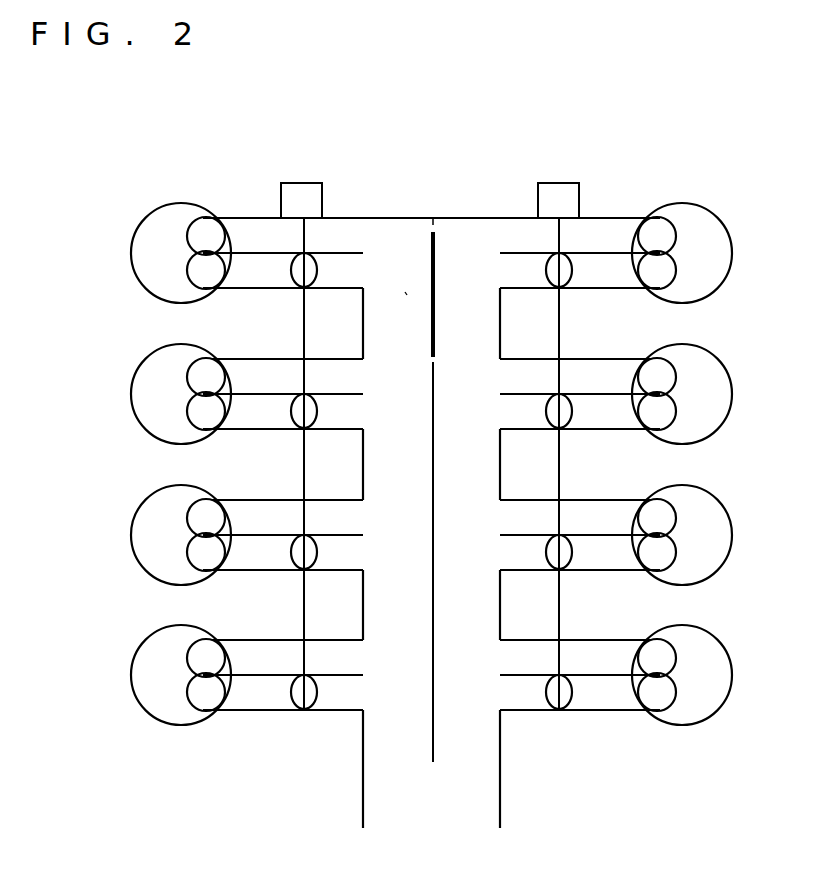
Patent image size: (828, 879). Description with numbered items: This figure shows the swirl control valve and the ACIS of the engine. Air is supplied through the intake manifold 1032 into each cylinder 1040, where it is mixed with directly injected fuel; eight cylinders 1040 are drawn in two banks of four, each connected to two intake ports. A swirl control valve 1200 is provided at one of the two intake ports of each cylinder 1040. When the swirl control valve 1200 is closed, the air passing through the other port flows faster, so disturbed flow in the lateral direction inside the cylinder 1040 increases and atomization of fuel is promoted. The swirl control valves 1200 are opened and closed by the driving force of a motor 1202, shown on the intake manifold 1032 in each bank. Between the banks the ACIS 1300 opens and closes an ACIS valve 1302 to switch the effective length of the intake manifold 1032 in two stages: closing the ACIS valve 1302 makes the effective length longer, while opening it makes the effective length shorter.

The intake manifold 1032 is at (470, 217).
The cylinder 1040 is at (131, 253).
The swirl control valve 1200 is at (291, 272).
The motor 1202 is at (292, 182).
The ACIS 1300 is at (407, 295).
The ACIS valve 1302 is at (432, 272).